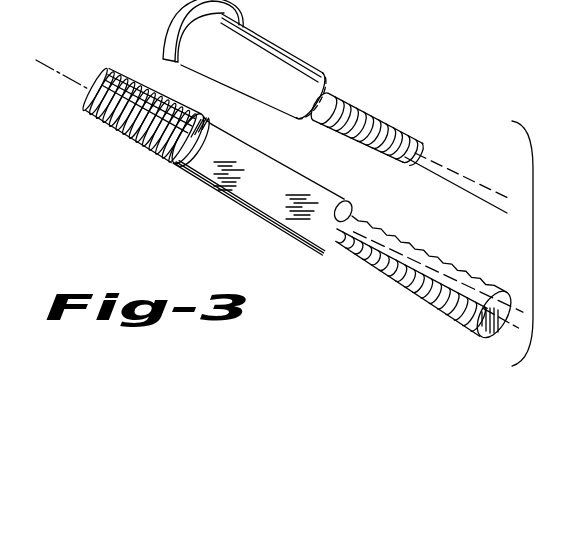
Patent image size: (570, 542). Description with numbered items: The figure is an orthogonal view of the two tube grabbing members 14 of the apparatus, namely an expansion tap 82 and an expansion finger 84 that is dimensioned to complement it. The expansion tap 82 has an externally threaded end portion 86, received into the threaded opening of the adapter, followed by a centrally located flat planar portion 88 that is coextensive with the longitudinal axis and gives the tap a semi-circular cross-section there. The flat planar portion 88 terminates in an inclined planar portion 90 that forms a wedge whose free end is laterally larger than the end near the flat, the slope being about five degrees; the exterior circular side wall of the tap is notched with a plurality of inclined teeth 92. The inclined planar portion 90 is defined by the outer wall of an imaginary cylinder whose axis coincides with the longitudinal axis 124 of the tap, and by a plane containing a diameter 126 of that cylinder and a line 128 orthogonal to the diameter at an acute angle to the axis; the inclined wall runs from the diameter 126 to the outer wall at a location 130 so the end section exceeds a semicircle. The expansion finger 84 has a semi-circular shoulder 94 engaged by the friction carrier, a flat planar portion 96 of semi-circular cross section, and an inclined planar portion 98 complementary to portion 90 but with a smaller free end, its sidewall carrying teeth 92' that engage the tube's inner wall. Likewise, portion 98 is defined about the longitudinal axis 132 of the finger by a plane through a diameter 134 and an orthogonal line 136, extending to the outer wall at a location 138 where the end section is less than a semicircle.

The grabbing members 14 is at (176, 215).
The expansion tap 82 is at (273, 240).
The expansion finger 84 is at (284, 43).
The externally threaded end portion 86 is at (130, 134).
The flat planar portion 88 is at (249, 193).
The inclined planar portion 90 is at (401, 247).
The inclined teeth 92 is at (411, 282).
The teeth 92' is at (387, 101).
The semi-circular shoulder 94 is at (176, 26).
The flat planar portion 96 is at (244, 92).
The inclined planar portion 98 is at (369, 154).
The longitudinal axis 124 is at (505, 332).
The diameter 126 is at (339, 201).
The line 128 is at (458, 279).
The location 130 is at (490, 299).
The longitudinal axis 132 is at (464, 190).
The diameter 134 is at (336, 84).
The line 136 is at (468, 173).
The location 138 is at (426, 139).